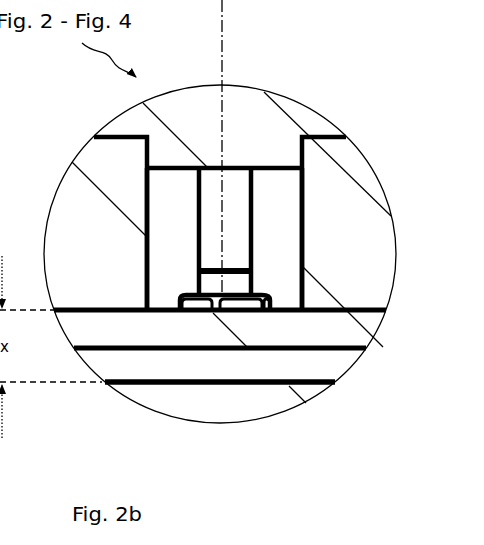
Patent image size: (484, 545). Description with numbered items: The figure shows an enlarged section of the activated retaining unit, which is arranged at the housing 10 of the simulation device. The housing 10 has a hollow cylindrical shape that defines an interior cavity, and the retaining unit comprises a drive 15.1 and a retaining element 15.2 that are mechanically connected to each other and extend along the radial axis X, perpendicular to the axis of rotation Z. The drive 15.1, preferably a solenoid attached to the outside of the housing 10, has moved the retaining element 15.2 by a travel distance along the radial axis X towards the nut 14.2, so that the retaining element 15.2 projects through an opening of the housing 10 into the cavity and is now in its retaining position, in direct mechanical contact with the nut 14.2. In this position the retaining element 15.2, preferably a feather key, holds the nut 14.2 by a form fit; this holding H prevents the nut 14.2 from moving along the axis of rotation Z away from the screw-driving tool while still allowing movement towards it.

The drive 15.1 is at (310, 122).
The retaining element 15.2 is at (238, 192).
The holding H is at (125, 269).
The housing 10 is at (352, 327).
The nut 14.2 is at (242, 405).